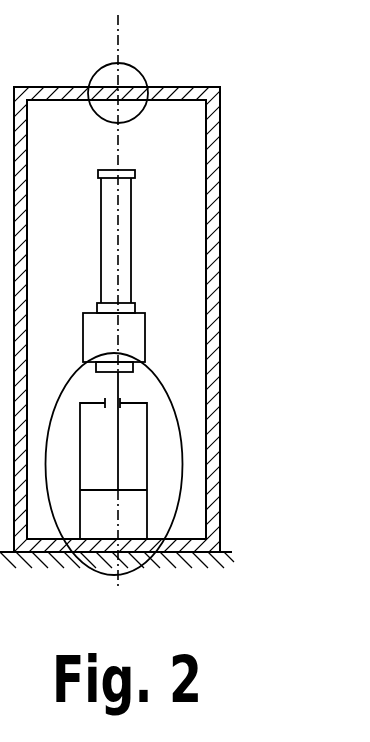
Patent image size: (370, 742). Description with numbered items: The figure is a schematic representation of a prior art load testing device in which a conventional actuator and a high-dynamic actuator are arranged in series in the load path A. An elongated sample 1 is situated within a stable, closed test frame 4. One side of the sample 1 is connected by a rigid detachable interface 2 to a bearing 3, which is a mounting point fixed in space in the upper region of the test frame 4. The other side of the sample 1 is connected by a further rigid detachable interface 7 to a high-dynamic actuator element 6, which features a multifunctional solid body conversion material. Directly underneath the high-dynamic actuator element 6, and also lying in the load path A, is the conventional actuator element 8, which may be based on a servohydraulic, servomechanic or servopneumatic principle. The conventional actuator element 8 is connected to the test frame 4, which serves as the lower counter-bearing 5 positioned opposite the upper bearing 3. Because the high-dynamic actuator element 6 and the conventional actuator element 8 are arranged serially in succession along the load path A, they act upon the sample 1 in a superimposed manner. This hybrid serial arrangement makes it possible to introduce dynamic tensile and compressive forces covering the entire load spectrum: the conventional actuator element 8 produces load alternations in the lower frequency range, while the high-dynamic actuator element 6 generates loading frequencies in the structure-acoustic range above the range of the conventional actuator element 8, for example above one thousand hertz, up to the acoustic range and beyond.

The load path A is at (118, 46).
The sample 1 is at (146, 245).
The detachable interface 2 is at (152, 171).
The bearing 3 is at (148, 67).
The test frame 4 is at (234, 120).
The counter-bearing 5 is at (234, 545).
The high-dynamic actuator element 6 is at (167, 332).
The interface 7 is at (155, 304).
The conventional actuator element 8 is at (198, 455).